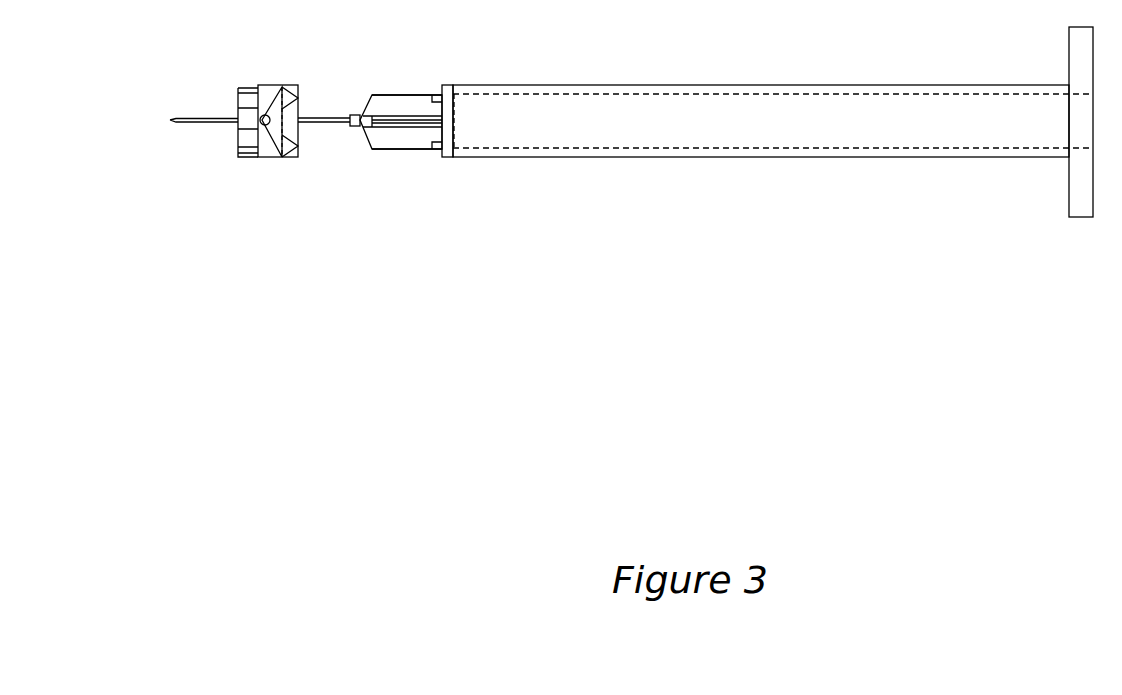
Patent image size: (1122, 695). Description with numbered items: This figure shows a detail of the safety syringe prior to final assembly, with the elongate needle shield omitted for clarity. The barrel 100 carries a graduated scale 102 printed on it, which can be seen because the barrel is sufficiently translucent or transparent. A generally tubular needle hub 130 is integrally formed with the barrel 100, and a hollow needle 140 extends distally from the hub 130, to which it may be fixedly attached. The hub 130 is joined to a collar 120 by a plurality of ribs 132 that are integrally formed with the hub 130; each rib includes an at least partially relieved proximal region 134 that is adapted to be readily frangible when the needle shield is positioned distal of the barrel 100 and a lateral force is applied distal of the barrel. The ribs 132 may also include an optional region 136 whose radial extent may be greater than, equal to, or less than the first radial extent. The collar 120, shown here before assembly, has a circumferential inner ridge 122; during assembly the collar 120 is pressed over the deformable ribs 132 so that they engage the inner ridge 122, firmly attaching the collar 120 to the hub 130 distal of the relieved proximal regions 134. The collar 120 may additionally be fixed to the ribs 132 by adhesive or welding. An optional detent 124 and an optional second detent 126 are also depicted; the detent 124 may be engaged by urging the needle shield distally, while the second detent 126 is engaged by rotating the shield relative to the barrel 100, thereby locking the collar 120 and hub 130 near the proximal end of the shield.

The barrel 100 is at (777, 86).
The graduated scale 102 is at (768, 140).
The collar 120 is at (263, 86).
The circumferential inner ridge 122 is at (280, 147).
The detent 124 is at (262, 128).
The second detent 126 is at (243, 95).
The generally tubular needle hub 130 is at (350, 117).
The ribs 132 is at (400, 94).
The at least partially relieved proximal region 134 is at (437, 95).
The region 136 is at (363, 137).
The hollow needle 140 is at (182, 122).